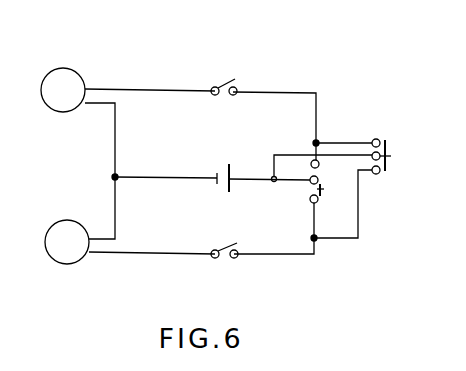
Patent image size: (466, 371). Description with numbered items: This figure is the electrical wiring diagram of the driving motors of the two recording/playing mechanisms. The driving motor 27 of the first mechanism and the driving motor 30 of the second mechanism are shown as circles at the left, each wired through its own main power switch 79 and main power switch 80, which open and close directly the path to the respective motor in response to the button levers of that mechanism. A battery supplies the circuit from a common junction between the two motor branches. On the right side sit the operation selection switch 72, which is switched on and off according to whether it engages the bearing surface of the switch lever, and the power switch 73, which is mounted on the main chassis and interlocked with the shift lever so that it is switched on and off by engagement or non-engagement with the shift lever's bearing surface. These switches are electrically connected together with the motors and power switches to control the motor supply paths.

The driving motor 27 is at (76, 69).
The driving motor 30 is at (64, 264).
The main power switch 79 is at (222, 82).
The main power switch 80 is at (217, 258).
The operation selection switch 72 is at (380, 172).
The power switch 73 is at (318, 202).